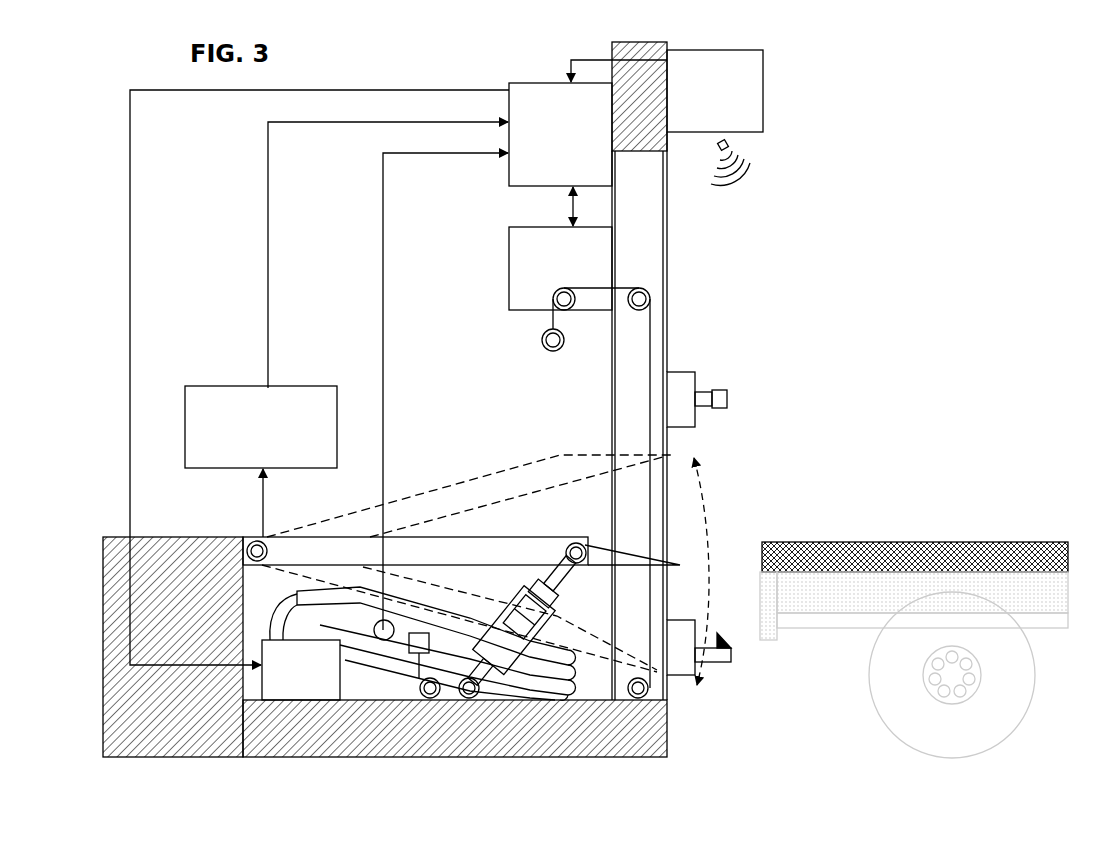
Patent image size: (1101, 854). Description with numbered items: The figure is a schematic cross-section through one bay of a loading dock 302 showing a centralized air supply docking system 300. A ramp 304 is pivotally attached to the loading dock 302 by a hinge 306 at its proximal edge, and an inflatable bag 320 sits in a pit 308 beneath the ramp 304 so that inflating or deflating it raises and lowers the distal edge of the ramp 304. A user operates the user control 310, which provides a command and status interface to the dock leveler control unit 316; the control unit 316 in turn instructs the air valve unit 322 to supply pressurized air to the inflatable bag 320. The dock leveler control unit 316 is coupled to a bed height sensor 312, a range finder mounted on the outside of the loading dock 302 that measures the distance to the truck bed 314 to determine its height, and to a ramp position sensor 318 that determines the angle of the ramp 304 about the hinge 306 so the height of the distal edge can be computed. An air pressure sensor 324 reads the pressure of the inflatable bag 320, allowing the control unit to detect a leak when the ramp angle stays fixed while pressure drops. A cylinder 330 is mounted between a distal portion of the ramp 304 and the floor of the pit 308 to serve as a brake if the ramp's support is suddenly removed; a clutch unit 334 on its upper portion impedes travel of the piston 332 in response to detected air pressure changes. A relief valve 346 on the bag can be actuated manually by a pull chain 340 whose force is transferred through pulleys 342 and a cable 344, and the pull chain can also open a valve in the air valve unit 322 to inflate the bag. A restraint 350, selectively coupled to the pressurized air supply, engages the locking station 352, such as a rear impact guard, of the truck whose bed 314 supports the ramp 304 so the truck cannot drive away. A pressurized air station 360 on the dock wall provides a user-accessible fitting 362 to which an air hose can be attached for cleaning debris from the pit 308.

The docking system 300 is at (1003, 151).
The loading dock 302 is at (182, 537).
The ramp 304 is at (476, 570).
The hinge 306 is at (268, 551).
The pit 308 is at (265, 600).
The user control 310 is at (537, 227).
The bed height sensor 312 is at (763, 66).
The truck bed 314 is at (852, 543).
The dock leveler control unit 316 is at (523, 83).
The ramp position sensor 318 is at (207, 386).
The inflatable bag 320 is at (403, 657).
The air valve unit 322 is at (340, 693).
The air pressure sensor 324 is at (396, 622).
The cylinder 330 is at (551, 620).
The piston 332 is at (547, 575).
The clutch unit 334 is at (560, 595).
The pull chain 340 is at (543, 350).
The pulleys 342 is at (553, 303).
The cable 344 is at (650, 330).
The relief valve 346 is at (430, 640).
The restraint 350 is at (731, 656).
The locking station 352 is at (778, 634).
The pressurized air station 360 is at (695, 415).
The fitting 362 is at (727, 399).